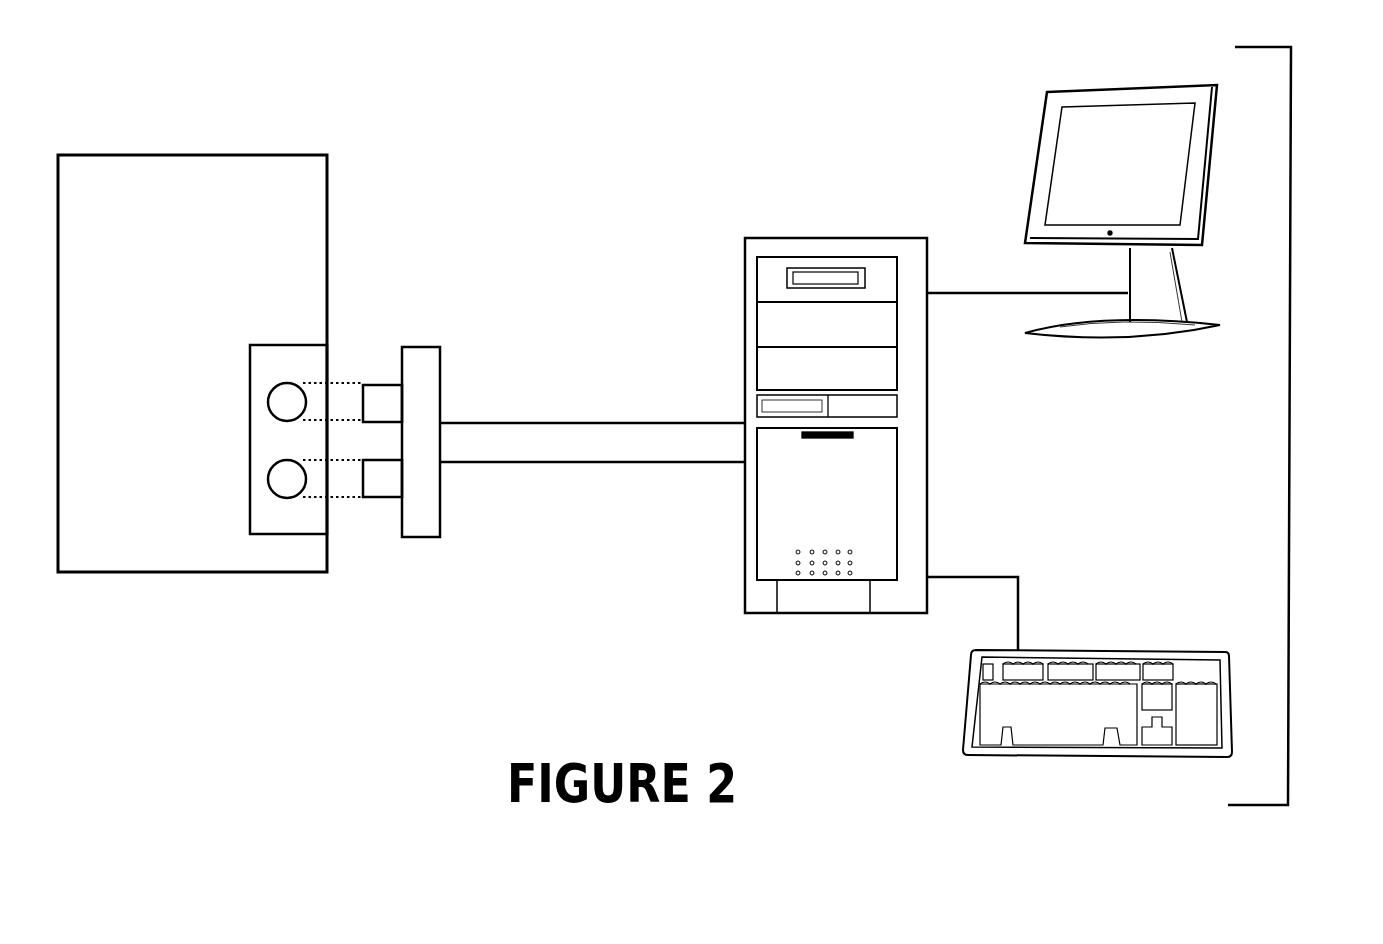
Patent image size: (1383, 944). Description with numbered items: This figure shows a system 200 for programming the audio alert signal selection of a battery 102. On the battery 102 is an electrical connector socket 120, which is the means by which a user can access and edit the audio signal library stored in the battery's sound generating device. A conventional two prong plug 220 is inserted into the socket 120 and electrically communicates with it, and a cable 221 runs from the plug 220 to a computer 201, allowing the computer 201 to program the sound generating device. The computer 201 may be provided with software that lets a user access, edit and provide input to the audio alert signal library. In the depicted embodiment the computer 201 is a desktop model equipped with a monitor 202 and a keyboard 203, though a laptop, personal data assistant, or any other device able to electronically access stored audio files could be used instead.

The battery 102 is at (122, 573).
The electrical connector socket 120 is at (278, 344).
The plug 220 is at (441, 384).
The cable 221 is at (520, 464).
The computer 201 is at (791, 236).
The monitor 202 is at (1090, 344).
The keyboard 203 is at (982, 758).
The system 200 is at (1293, 426).